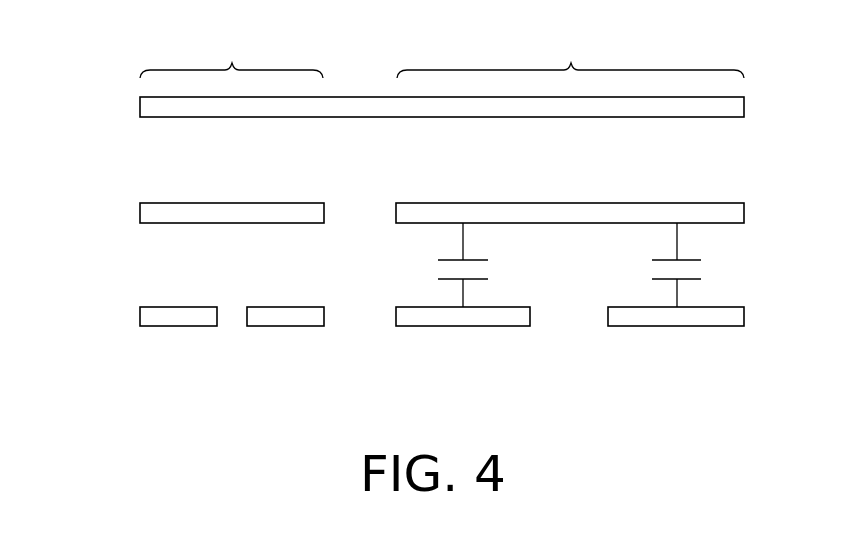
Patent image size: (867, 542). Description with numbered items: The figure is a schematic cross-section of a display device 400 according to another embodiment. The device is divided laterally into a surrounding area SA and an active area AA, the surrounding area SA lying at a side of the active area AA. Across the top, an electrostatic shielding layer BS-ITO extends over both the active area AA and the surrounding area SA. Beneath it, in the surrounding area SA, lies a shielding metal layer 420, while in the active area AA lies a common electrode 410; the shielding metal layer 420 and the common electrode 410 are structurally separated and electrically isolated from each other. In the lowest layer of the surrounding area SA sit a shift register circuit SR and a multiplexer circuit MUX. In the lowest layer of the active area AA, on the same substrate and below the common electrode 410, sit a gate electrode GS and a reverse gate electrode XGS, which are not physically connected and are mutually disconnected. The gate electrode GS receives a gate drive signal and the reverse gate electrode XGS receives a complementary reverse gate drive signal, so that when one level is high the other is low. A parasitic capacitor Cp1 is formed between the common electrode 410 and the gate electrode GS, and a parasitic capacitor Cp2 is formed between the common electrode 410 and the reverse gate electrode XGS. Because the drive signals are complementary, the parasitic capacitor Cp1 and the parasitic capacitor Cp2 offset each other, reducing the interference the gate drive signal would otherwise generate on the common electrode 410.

The display device 400 is at (832, 478).
The common electrode 410 is at (744, 213).
The shielding metal layer 420 is at (140, 215).
The electrostatic shielding layer BS-ITO is at (140, 107).
The surrounding area SA is at (231, 51).
The active area AA is at (570, 51).
The shift register circuit SR is at (140, 320).
The multiplexer circuit MUX is at (324, 322).
The gate electrode GS is at (530, 322).
The reverse gate electrode XGS is at (744, 322).
The parasitic capacitor Cp1 is at (442, 265).
The parasitic capacitor Cp2 is at (702, 265).